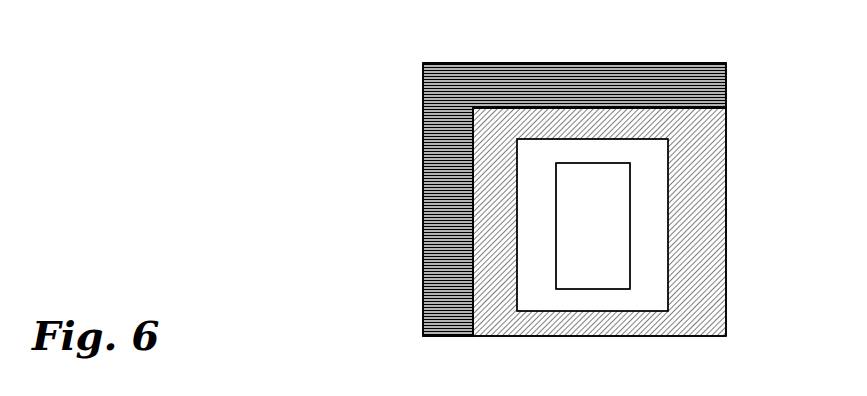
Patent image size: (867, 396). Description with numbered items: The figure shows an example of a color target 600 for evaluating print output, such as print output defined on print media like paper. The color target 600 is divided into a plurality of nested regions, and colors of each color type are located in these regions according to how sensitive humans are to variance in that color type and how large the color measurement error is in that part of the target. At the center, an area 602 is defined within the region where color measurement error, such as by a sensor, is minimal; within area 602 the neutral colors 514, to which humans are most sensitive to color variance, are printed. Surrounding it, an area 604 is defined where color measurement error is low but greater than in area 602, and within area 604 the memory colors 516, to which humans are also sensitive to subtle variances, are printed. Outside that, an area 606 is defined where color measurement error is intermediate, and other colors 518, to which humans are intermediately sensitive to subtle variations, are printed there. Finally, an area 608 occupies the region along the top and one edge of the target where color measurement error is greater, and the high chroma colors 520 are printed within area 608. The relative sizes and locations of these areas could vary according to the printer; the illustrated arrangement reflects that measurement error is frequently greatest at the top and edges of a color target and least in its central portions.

The color target 600 is at (455, 192).
The area 602 is at (648, 148).
The area 604 is at (592, 159).
The area 606 is at (594, 171).
The area 608 is at (557, 171).
The neutral colors 514 is at (473, 203).
The memory colors 516 is at (492, 225).
The other colors 518 is at (521, 222).
The high chroma colors 520 is at (521, 199).